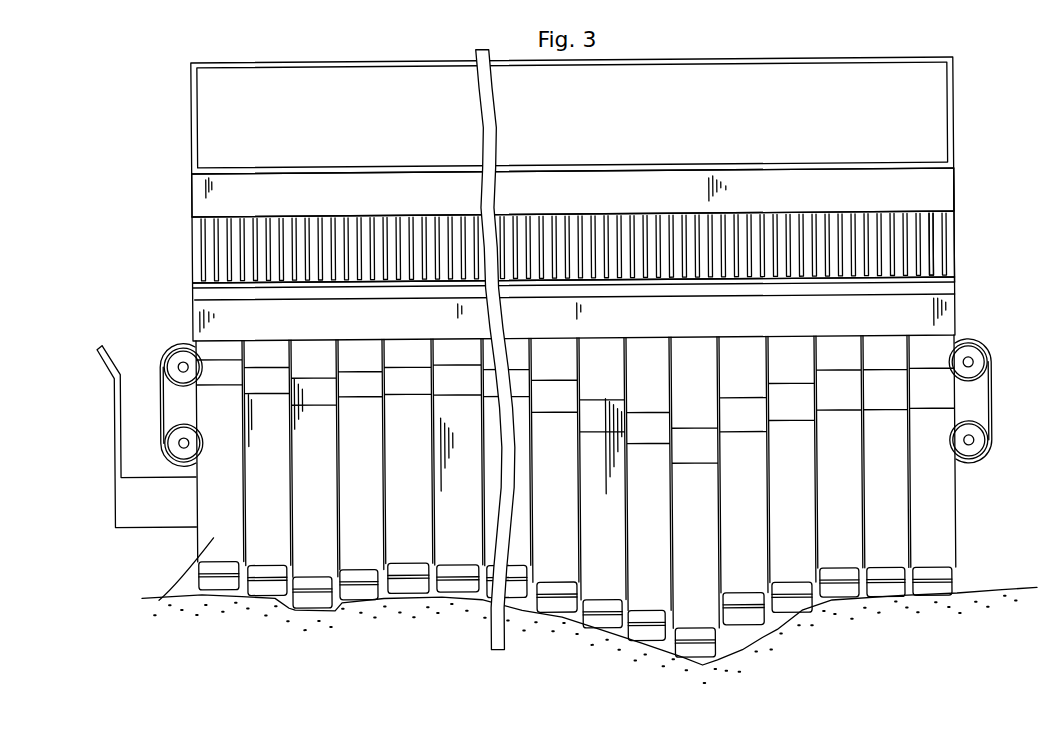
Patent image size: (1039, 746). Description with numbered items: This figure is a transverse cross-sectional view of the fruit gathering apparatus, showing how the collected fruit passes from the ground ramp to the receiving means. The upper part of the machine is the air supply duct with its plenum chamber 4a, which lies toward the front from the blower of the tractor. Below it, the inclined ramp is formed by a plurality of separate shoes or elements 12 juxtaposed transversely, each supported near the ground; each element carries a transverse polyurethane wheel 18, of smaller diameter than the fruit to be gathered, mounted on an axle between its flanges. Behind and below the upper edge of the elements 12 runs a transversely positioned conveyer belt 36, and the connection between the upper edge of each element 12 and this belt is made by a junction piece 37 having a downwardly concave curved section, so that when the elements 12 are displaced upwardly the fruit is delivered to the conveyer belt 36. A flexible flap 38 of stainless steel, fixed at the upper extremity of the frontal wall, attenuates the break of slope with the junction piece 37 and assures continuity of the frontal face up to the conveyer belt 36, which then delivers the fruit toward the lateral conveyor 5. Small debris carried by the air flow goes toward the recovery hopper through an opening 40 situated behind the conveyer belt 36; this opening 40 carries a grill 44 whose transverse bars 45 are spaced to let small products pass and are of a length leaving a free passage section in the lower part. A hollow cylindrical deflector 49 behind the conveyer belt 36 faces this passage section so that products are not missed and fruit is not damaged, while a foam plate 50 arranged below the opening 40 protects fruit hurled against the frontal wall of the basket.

The plenum chamber 4a is at (941, 134).
The foam plate 50 is at (946, 193).
The opening 40 is at (968, 211).
The grill 44 is at (946, 259).
The bars 45 is at (939, 239).
The deflector 49 is at (947, 288).
The flexible flap 38 is at (837, 395).
The junction piece 37 is at (650, 369).
The conveyer belt 36 is at (178, 350).
The lateral conveyor 5 is at (136, 512).
The shoes or elements 12 is at (142, 598).
The polyurethane wheel 18 is at (220, 585).